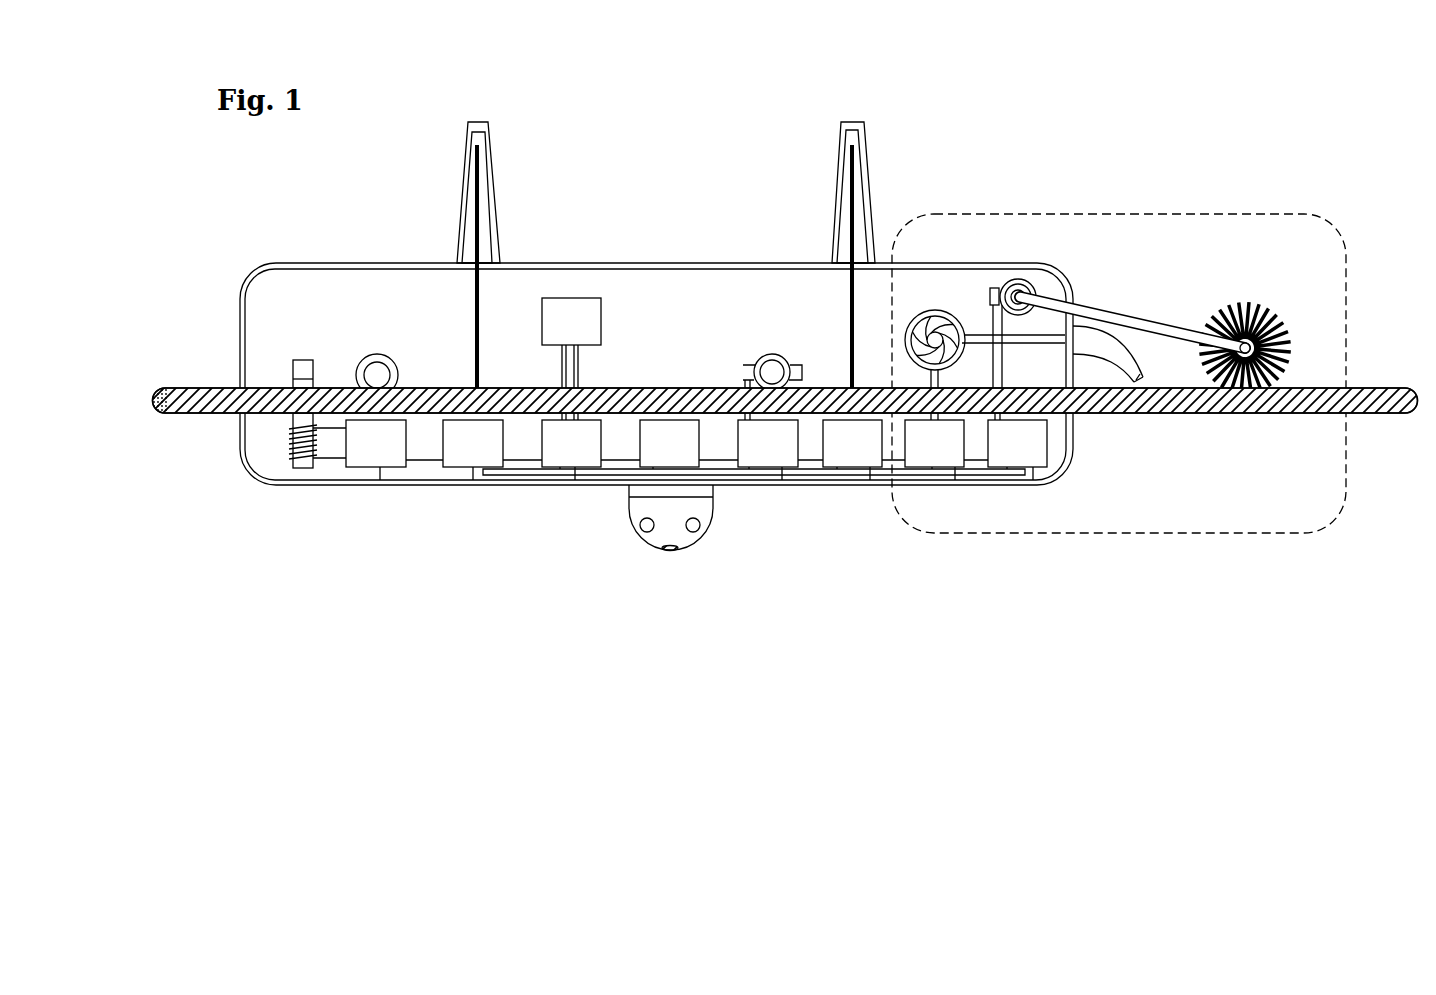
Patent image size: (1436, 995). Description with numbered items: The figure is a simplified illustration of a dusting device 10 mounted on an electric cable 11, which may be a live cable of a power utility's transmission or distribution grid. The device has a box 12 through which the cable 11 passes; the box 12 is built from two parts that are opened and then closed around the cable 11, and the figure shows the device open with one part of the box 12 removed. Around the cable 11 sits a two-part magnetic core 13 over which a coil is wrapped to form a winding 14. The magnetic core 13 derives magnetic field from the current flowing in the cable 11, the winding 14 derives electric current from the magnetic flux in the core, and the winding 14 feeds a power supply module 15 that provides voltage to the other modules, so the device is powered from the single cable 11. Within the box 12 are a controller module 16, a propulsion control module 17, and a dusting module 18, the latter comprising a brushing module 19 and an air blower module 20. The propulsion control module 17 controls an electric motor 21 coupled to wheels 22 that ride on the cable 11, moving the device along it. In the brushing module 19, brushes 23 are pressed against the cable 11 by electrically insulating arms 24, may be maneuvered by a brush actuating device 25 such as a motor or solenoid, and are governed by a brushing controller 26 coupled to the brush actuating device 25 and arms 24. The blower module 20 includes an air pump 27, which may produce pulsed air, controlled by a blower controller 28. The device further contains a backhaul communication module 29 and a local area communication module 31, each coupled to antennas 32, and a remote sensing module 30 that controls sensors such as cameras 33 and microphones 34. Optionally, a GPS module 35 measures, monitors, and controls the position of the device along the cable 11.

The dusting device 10 is at (638, 207).
The electric cable 11 is at (178, 386).
The box 12 is at (577, 263).
The magnetic core 13 is at (315, 368).
The winding 14 is at (287, 447).
The power supply module 15 is at (380, 484).
The controller module 16 is at (574, 484).
The propulsion control module 17 is at (782, 484).
The dusting module 18 is at (1082, 213).
The brushing module 19 is at (1266, 300).
The air blower module 20 is at (1100, 325).
The electric motor 21 is at (745, 365).
The wheels 22 is at (385, 357).
The brushes 23 is at (1240, 296).
The arms 24 is at (1159, 316).
The brush actuating device 25 is at (998, 283).
The brushing controller 26 is at (1035, 485).
The air pump 27 is at (934, 310).
The blower controller 28 is at (955, 485).
The backhaul communication module 29 is at (470, 484).
The remote sensing module 30 is at (665, 419).
The local area communication module 31 is at (868, 484).
The antennas 32 is at (480, 196).
The cameras 33 is at (640, 531).
The microphones 34 is at (670, 556).
The GPS module 35 is at (601, 325).